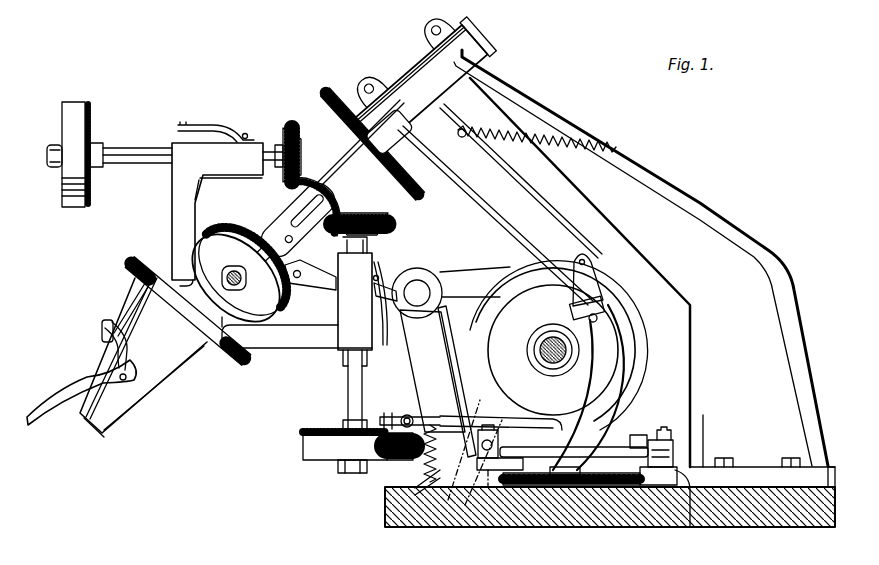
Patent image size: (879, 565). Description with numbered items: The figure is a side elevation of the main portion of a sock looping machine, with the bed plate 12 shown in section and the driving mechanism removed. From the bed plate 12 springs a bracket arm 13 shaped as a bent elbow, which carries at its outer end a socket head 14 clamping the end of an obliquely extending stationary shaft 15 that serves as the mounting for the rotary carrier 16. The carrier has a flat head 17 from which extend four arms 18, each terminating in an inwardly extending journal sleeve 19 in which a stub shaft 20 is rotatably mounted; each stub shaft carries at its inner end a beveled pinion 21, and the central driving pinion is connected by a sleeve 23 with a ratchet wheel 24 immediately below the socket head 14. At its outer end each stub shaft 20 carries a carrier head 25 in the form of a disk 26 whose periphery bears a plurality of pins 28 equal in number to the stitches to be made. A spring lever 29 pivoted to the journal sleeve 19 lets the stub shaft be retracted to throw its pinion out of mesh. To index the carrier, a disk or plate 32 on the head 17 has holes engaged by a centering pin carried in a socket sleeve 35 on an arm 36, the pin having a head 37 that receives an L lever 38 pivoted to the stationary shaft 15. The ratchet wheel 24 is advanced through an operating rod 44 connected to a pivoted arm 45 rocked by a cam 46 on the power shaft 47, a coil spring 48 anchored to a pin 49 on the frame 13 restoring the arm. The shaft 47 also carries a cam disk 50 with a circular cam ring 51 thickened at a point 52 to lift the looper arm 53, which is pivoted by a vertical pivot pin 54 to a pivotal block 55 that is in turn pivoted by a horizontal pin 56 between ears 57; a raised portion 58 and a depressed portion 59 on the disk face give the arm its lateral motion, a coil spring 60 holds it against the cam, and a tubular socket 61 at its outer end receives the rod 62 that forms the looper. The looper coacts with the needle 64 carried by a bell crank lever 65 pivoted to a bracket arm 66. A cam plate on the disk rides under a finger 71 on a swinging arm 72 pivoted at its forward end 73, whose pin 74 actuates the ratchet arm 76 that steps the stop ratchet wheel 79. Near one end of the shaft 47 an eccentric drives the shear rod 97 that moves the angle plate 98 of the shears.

The bed plate 12 is at (660, 520).
The bracket arm 13 is at (690, 197).
The socket head 14 is at (410, 68).
The stationary shaft 15 is at (160, 375).
The rotary carrier 16 is at (205, 214).
The flat head 17 is at (223, 330).
The arms 18 is at (190, 210).
The journal sleeve 19 is at (248, 143).
The stub shaft 20 is at (138, 148).
The beveled pinion 21 is at (290, 126).
The sleeve 23 is at (338, 170).
The ratchet wheel 24 is at (340, 127).
The carrier head 25 is at (73, 100).
The disk 26 is at (66, 117).
The pins 28 is at (95, 113).
The spring lever 29 is at (207, 125).
The disk or plate 32 is at (157, 265).
The socket sleeve 35 is at (127, 307).
The arm 36 is at (172, 305).
The head 37 is at (110, 338).
The L lever 38 is at (60, 405).
The operating rod 44 is at (492, 232).
The pivoted arm 45 is at (590, 414).
The cam 46 is at (585, 348).
The power shaft 47 is at (548, 348).
The coil spring 48 is at (566, 200).
The pin 49 is at (462, 133).
The cam disk 50 is at (612, 296).
The cam ring 51 is at (555, 378).
The thickened point 52 is at (555, 344).
The looper arm 53 is at (430, 405).
The vertical pivot pin 54 is at (425, 527).
The pivotal block 55 is at (498, 470).
The horizontal pin 56 is at (487, 460).
The ears 57 is at (455, 520).
The raised portion 58 is at (628, 381).
The depressed portion 59 is at (655, 297).
The coil spring 60 is at (430, 487).
The tubular socket 61 is at (380, 410).
The rod 62 is at (385, 470).
The needle 64 is at (440, 453).
The bell crank lever 65 is at (432, 371).
The bracket arm 66 is at (452, 344).
The finger 71 is at (610, 448).
The swinging arm 72 is at (672, 436).
The forward end 73 is at (678, 458).
The pin 74 is at (637, 430).
The ratchet arm 76 is at (685, 527).
The stop ratchet wheel 79 is at (560, 487).
The shear rod 97 is at (412, 289).
The angle plate 98 is at (305, 270).